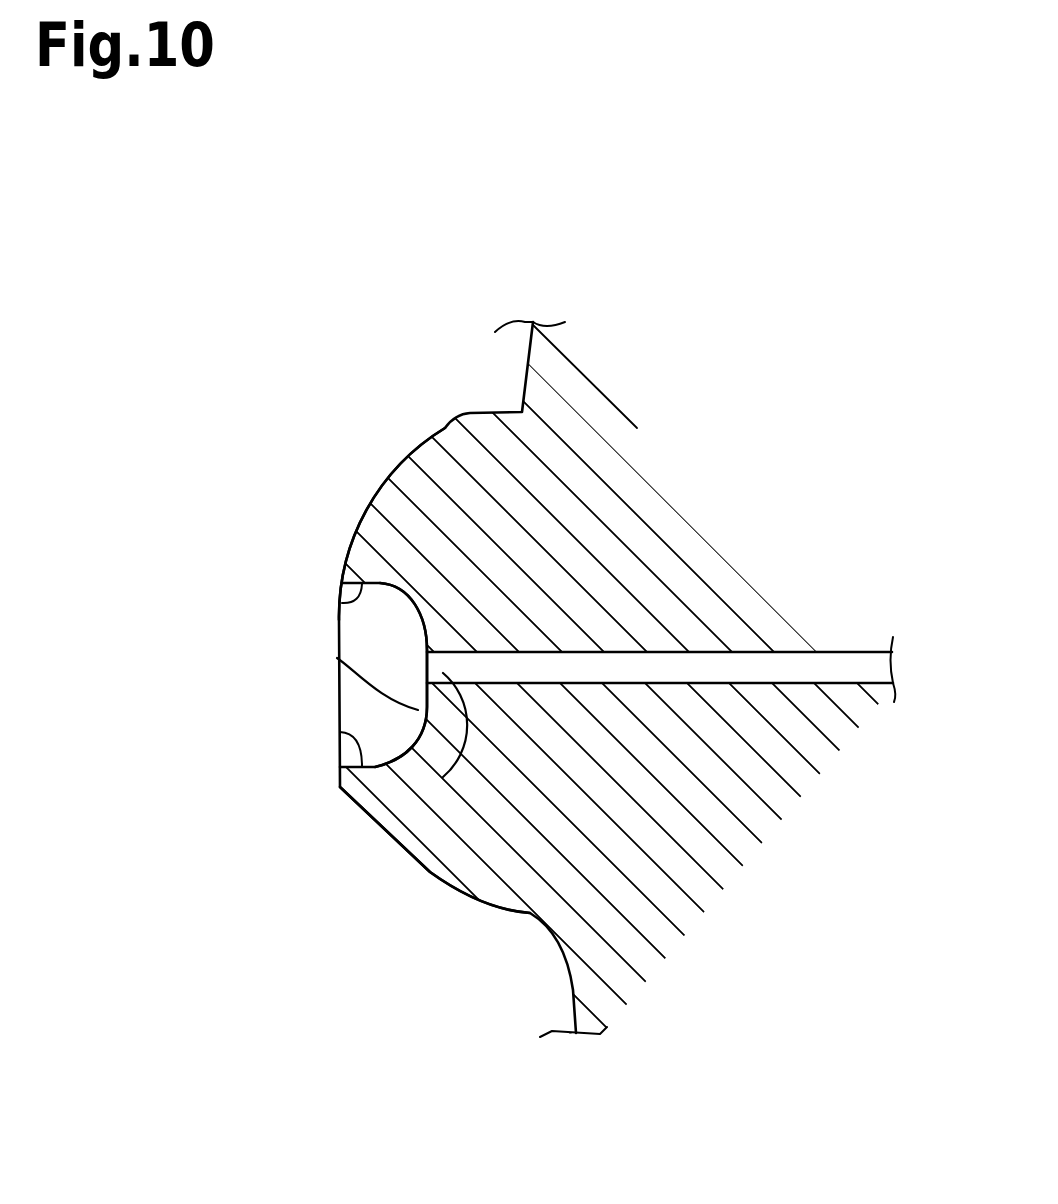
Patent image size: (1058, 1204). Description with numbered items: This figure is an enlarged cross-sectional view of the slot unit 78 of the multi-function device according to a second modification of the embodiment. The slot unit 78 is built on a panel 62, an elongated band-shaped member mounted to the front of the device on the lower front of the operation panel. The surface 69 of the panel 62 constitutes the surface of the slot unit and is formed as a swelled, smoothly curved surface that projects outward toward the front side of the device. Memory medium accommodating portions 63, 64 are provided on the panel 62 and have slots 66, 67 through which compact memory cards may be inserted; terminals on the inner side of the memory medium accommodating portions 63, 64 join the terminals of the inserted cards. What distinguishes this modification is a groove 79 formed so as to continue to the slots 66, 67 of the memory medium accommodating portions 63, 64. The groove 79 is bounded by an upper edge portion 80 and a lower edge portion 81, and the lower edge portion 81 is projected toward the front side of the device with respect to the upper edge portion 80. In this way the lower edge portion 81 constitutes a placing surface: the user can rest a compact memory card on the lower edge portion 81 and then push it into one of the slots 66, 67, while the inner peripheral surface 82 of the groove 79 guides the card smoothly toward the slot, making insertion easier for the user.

The panel 62 is at (427, 872).
The memory medium accommodating portion 63 is at (676, 597).
The memory medium accommodating portion 64 is at (661, 669).
The slot 66 is at (312, 818).
The slot 67 is at (443, 777).
The surface 69 is at (447, 428).
The slot unit 78 is at (313, 418).
The groove 79 is at (357, 685).
The upper edge portion 80 is at (337, 603).
The lower edge portion 81 is at (337, 732).
The inner peripheral surface 82 is at (337, 658).